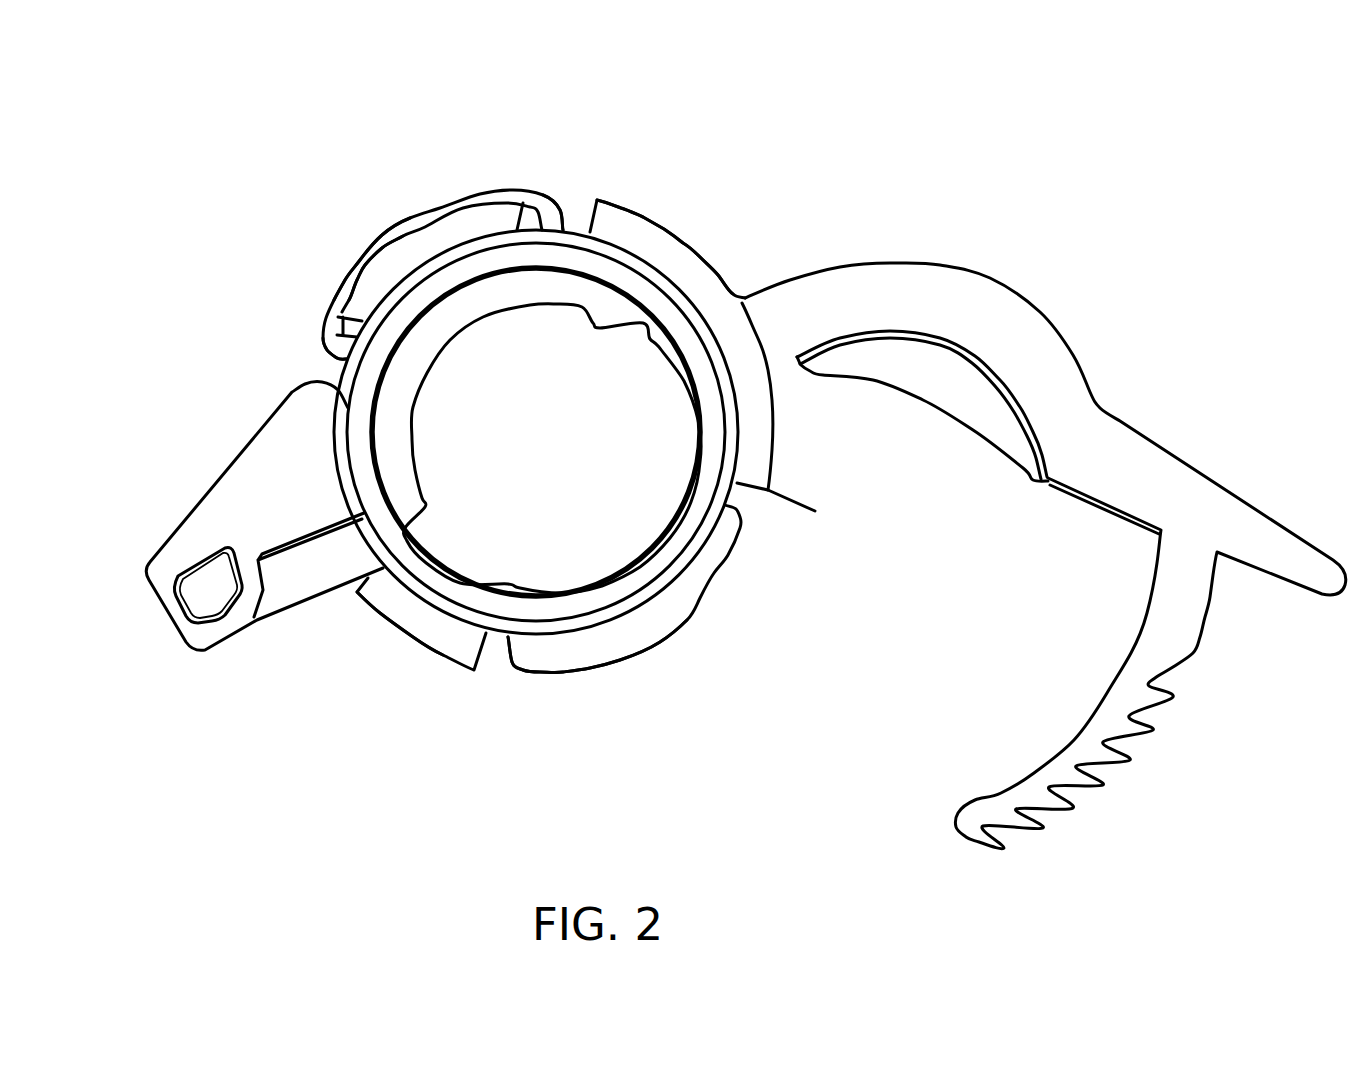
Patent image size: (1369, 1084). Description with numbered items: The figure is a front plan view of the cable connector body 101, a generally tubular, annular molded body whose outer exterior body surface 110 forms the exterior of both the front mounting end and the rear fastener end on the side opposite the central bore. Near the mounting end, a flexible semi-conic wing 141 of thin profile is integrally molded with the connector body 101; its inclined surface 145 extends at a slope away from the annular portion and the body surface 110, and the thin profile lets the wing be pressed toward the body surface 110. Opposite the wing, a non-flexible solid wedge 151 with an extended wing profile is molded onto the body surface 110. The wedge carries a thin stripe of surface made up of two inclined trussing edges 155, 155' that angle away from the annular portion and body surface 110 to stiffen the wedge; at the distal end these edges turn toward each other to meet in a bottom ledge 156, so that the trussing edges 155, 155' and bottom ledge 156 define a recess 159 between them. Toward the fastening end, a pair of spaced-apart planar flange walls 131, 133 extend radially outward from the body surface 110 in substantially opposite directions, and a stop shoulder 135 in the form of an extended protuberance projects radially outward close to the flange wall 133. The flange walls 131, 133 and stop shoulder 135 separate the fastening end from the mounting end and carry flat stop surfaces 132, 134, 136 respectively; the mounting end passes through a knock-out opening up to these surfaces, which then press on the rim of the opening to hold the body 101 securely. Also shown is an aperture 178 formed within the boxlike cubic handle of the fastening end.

The cable connector body 101 is at (1073, 101).
The outer exterior body surface 110 is at (727, 495).
The flange wall 131 is at (666, 230).
The flat stop surface 132 is at (697, 283).
The flange wall 133 is at (450, 660).
The flat stop surface 134 is at (415, 622).
The stop shoulder 135 is at (277, 403).
The flat stop surface 136 is at (303, 483).
The flexible semi-conic wing 141 is at (705, 613).
The inclined surface 145 is at (630, 638).
The solid wedge 151 is at (445, 200).
The trussing edge 155 is at (579, 179).
The trussing edge 155' is at (260, 366).
The bottom ledge 156 is at (382, 246).
The recess 159 is at (380, 281).
The aperture 178 is at (207, 590).